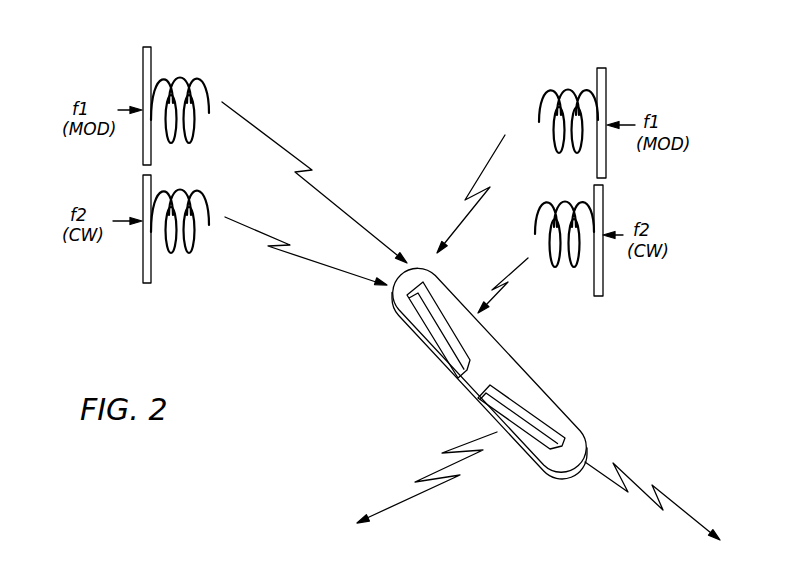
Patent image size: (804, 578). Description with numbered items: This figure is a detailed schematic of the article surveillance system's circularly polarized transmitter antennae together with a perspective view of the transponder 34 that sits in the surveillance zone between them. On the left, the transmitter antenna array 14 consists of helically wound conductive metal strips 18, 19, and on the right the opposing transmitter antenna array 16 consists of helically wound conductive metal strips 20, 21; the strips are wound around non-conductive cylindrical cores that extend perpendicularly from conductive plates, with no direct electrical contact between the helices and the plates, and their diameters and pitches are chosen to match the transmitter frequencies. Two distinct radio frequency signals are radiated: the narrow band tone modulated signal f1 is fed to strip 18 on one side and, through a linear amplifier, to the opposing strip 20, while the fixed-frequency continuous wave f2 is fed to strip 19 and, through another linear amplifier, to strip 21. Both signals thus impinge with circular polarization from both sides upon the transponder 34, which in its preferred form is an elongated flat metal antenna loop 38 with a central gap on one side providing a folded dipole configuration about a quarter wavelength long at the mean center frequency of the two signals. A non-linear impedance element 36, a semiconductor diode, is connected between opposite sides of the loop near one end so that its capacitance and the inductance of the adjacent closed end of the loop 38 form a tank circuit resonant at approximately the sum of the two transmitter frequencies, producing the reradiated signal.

The transmitter antenna array 14 is at (196, 88).
The transmitter antenna array 16 is at (542, 114).
The helically wound conductive metal strip 18 is at (190, 151).
The helically wound conductive metal strip 19 is at (207, 187).
The helically wound conductive metal strip 20 is at (563, 163).
The helically wound conductive metal strip 21 is at (560, 201).
The transponder 34 is at (410, 366).
The non-linear impedance element 36 is at (531, 410).
The antenna loop 38 is at (471, 373).